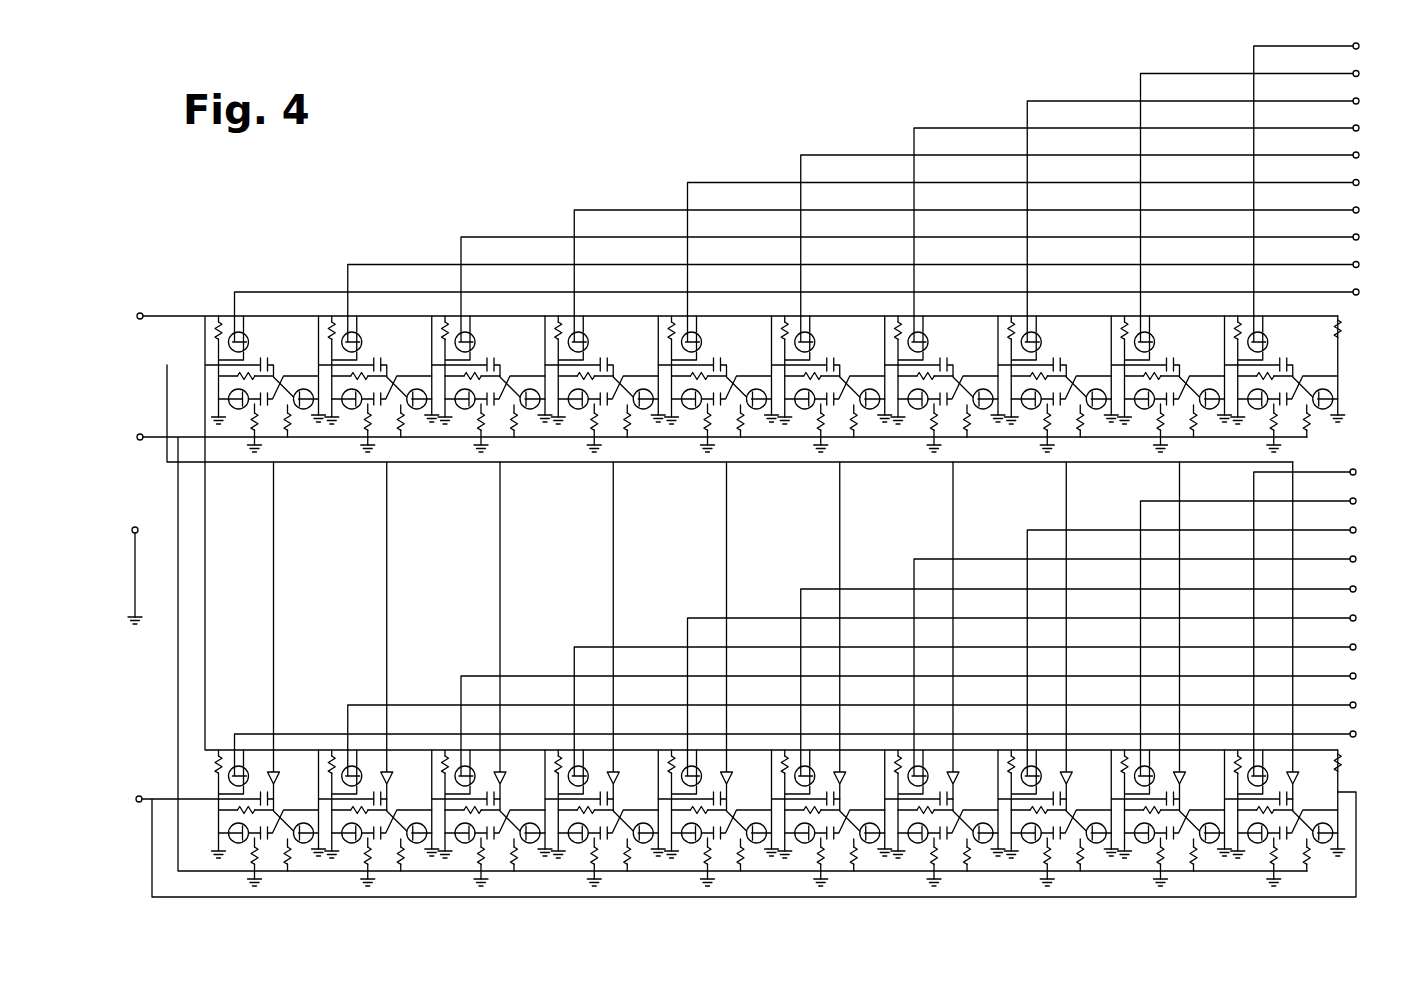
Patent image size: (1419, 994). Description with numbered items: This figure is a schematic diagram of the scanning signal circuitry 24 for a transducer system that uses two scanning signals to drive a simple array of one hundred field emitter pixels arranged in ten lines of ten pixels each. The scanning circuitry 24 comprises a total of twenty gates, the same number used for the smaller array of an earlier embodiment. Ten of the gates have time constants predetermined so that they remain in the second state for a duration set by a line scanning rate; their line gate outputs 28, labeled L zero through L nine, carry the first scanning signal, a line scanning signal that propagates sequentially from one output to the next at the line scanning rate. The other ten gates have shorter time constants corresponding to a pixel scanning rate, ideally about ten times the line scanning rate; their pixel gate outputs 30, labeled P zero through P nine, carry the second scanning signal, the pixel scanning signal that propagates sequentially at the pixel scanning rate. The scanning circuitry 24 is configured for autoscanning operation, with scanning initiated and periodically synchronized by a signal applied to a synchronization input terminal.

The scanning signal circuitry 24 is at (659, 139).
The pixel gate outputs 30 is at (1359, 46).
The line gate outputs 28 is at (1356, 472).